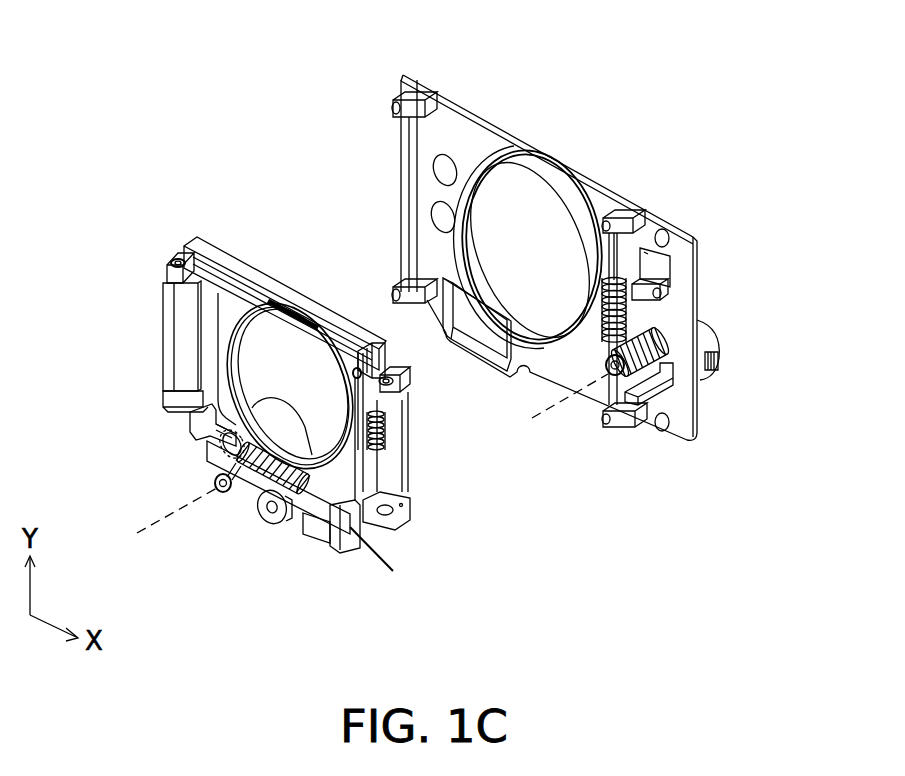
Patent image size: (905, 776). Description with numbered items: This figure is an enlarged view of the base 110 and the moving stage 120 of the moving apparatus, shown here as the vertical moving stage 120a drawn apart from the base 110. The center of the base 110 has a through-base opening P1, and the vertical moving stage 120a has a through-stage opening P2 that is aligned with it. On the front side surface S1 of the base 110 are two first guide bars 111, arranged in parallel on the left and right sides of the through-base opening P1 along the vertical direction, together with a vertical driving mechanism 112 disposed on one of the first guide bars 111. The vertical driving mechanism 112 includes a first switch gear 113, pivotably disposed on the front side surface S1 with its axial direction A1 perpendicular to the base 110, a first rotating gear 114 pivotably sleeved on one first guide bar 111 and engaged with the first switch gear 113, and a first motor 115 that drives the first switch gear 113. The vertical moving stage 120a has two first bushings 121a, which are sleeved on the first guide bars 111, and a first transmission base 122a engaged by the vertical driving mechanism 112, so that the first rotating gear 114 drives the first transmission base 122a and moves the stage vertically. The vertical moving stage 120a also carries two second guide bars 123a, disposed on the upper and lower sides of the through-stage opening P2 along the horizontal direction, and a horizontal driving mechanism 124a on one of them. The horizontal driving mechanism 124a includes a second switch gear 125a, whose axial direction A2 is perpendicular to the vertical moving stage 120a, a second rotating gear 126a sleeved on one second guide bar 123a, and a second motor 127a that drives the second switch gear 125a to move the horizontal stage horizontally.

The base 110 is at (463, 106).
The first guide bars 111 is at (410, 132).
The vertical driving mechanism 112 is at (800, 313).
The first switch gear 113 is at (672, 398).
The first rotating gear 114 is at (668, 350).
The first motor 115 is at (704, 340).
The front side surface S1 is at (492, 139).
The through-base opening P1 is at (532, 203).
The axial direction A1 is at (554, 405).
The moving stage 120 is at (282, 395).
The vertical moving stage 120a is at (231, 284).
The first bushings 121a is at (172, 264).
The first transmission base 122a is at (372, 430).
The second guide bars 123a is at (229, 257).
The horizontal driving mechanism 124a is at (330, 626).
The second switch gear 125a is at (232, 498).
The second rotating gear 126a is at (268, 525).
The second motor 127a is at (333, 540).
The through-stage opening P2 is at (322, 361).
The axial direction A2 is at (156, 524).